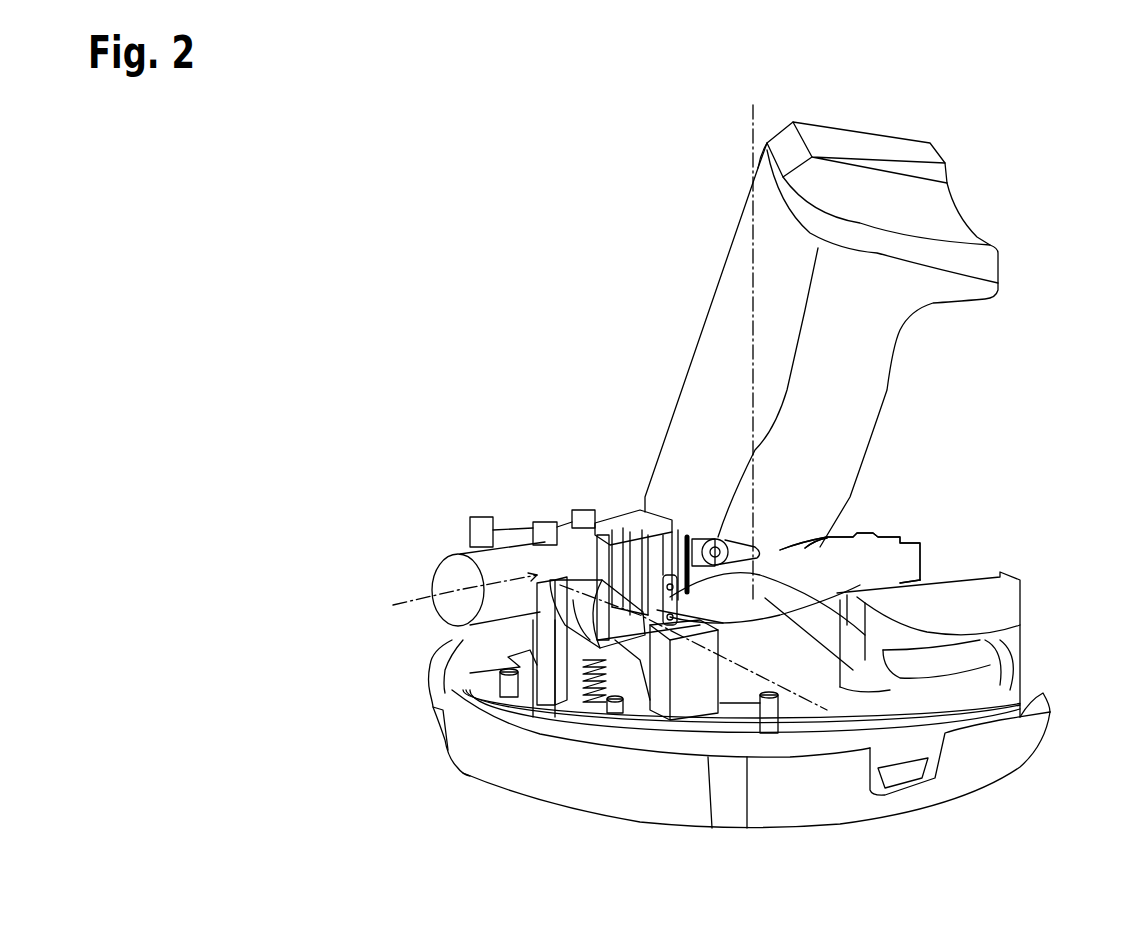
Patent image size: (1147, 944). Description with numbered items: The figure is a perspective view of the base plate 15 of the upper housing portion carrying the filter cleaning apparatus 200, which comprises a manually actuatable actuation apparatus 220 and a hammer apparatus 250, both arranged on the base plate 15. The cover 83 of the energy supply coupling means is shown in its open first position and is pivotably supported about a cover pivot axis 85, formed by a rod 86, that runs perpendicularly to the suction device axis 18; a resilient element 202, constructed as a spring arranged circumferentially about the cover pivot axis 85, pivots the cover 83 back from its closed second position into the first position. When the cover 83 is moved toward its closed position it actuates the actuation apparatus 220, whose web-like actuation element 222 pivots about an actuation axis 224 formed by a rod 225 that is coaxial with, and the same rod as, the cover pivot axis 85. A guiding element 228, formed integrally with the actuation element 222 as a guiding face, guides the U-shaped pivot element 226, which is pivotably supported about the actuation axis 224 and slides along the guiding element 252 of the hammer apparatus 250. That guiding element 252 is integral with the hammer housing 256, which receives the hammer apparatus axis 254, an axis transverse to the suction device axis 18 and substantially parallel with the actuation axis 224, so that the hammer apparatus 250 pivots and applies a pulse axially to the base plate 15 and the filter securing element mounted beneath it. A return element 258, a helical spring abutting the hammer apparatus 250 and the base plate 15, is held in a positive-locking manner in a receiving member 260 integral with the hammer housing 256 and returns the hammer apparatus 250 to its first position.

The base plate 15 is at (483, 767).
The suction device axis 18 is at (753, 118).
The cover 83 is at (738, 252).
The cover pivot axis 85 is at (693, 568).
The rod 86 is at (827, 540).
The filter cleaning apparatus 200 is at (555, 465).
The resilient element 202 is at (990, 628).
The actuation apparatus 220 is at (670, 516).
The actuation element 222 is at (576, 566).
The actuation axis 224 is at (869, 557).
The rod 225 is at (885, 518).
The pivot element 226 is at (920, 683).
The guiding element 228 is at (632, 518).
The hammer apparatus 250 is at (470, 537).
The guiding element 252 is at (537, 615).
The hammer apparatus axis 254 is at (438, 601).
The hammer housing 256 is at (647, 653).
The return element 258 is at (580, 677).
The receiving member 260 is at (577, 640).